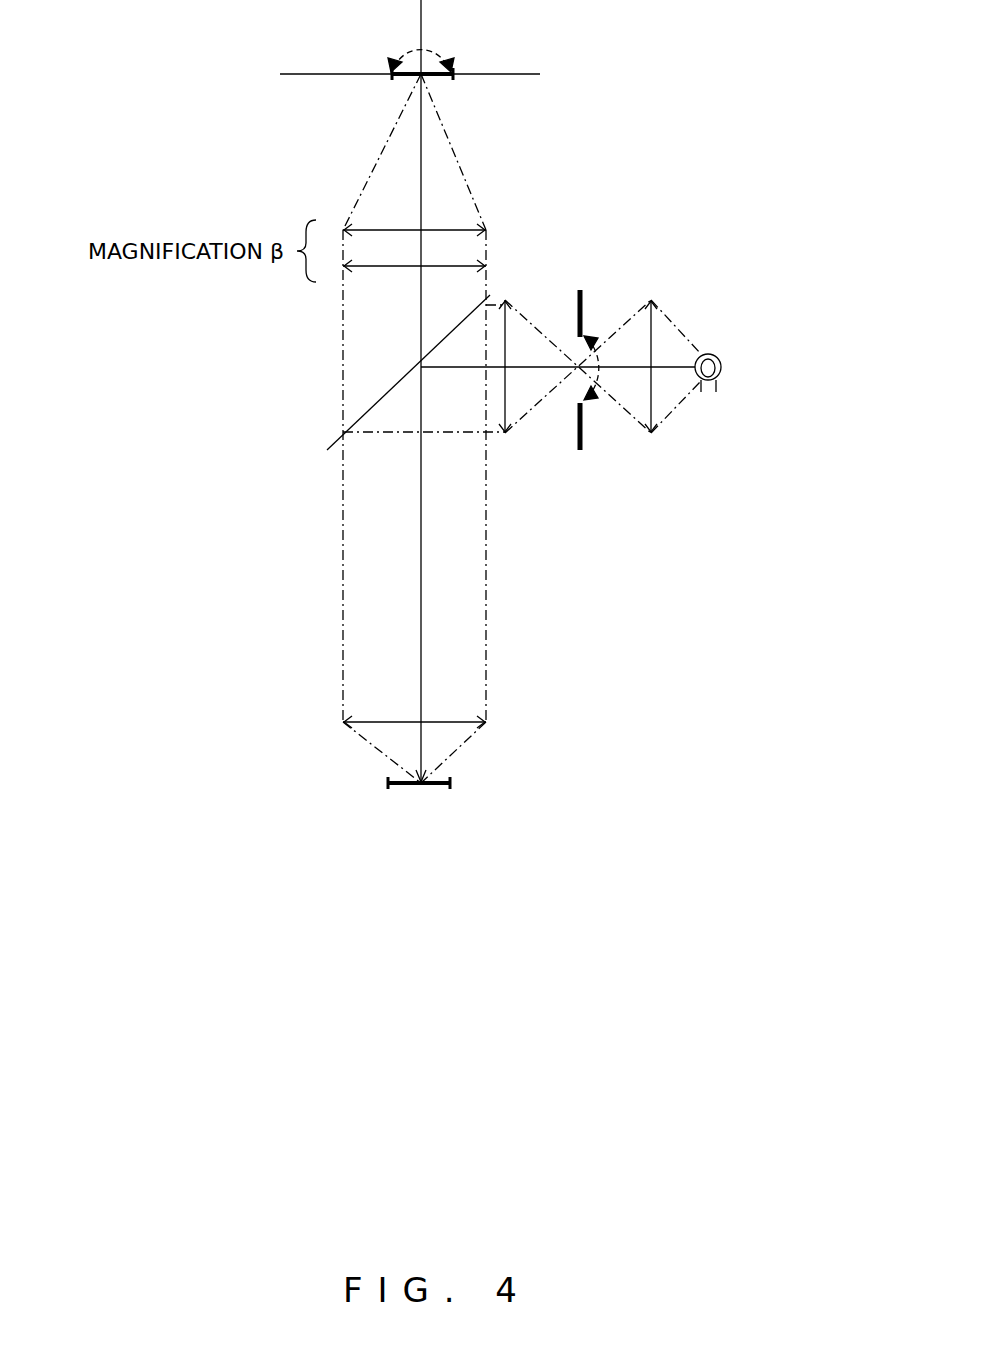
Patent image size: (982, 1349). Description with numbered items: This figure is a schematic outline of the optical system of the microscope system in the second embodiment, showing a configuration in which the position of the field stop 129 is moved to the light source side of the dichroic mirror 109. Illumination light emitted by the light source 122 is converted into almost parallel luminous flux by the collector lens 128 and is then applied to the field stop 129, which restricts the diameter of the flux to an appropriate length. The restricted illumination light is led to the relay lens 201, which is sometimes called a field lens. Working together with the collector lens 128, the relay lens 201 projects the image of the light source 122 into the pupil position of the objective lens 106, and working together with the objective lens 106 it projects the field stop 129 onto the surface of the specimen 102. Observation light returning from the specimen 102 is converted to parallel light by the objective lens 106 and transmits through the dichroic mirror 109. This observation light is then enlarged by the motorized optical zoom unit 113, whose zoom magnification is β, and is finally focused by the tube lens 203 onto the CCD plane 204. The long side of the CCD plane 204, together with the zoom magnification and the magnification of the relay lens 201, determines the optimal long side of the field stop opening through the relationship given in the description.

The CCD plane 204 is at (379, 59).
The tube lens 203 is at (385, 229).
The motorized optical zoom unit 113 is at (382, 268).
The relay lens 201 is at (510, 325).
The field stop 129 is at (582, 300).
The collector lens 128 is at (655, 333).
The light source 122 is at (718, 381).
The dichroic mirror 109 is at (378, 400).
The objective lens 106 is at (391, 722).
The specimen 102 is at (380, 784).